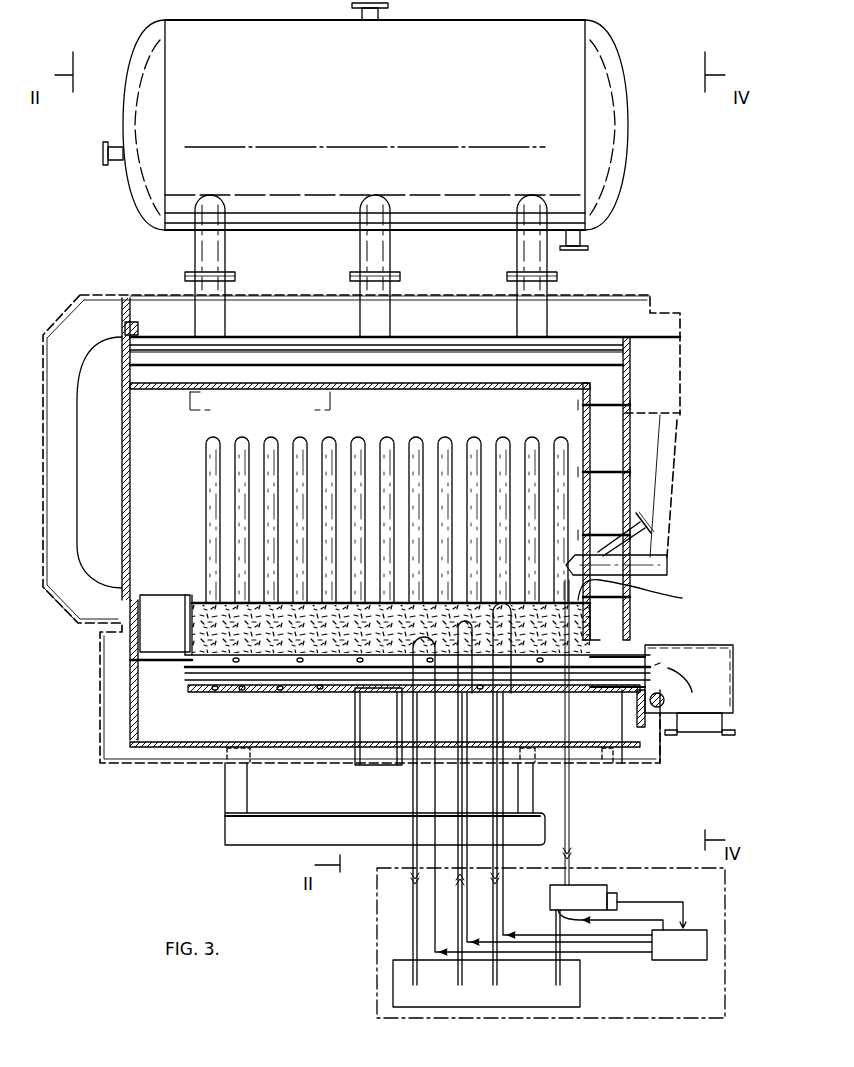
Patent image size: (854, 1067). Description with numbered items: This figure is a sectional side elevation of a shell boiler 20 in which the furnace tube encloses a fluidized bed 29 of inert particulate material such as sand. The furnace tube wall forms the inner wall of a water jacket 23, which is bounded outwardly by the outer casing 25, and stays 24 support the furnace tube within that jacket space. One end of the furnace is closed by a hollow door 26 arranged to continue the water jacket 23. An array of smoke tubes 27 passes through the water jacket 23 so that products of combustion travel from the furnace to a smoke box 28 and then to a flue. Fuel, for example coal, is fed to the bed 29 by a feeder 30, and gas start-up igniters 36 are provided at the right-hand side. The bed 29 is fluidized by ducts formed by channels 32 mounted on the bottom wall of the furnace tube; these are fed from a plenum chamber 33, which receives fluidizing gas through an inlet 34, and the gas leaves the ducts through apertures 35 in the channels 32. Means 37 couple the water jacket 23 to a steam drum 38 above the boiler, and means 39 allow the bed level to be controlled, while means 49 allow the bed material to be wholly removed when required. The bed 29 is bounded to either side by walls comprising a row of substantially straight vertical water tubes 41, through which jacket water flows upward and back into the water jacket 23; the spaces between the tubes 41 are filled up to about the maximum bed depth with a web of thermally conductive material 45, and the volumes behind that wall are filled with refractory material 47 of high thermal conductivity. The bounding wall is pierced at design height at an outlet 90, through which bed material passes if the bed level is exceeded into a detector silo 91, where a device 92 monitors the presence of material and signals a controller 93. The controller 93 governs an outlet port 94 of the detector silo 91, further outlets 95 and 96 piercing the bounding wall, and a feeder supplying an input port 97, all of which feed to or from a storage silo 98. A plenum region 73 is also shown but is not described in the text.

The shell boiler 20 is at (645, 283).
The water jacket 23 is at (470, 328).
The stays 24 is at (615, 398).
The outer casing 25 is at (302, 296).
The hollow door 26 is at (62, 608).
The smoke tubes 27 is at (600, 358).
The smoke box 28 is at (666, 368).
The bed 29 is at (265, 617).
The feeder 30 is at (667, 566).
The channels 32 is at (322, 684).
The plenum chamber 33 is at (713, 678).
The inlet 34 is at (711, 730).
The apertures 35 is at (242, 690).
The gas start-up igniters 36 is at (648, 516).
The coupling means 37 is at (200, 251).
The steam drum 38 is at (383, 102).
The bed level control means 39 is at (666, 1000).
The water tubes 41 is at (276, 466).
The web of thermally conductive material 45 is at (290, 598).
The refractory material 47 is at (343, 582).
The bed removal means 49 is at (378, 760).
The plenum chamber 73 is at (559, 732).
The outlet 90 is at (640, 595).
The detector silo 91 is at (586, 907).
The monitoring device 92 is at (613, 905).
The controller 93 is at (691, 956).
The outlet port 94 is at (558, 910).
The further outlet 95 is at (508, 693).
The further outlet 96 is at (434, 693).
The input port 97 is at (470, 693).
The storage silo 98 is at (533, 995).